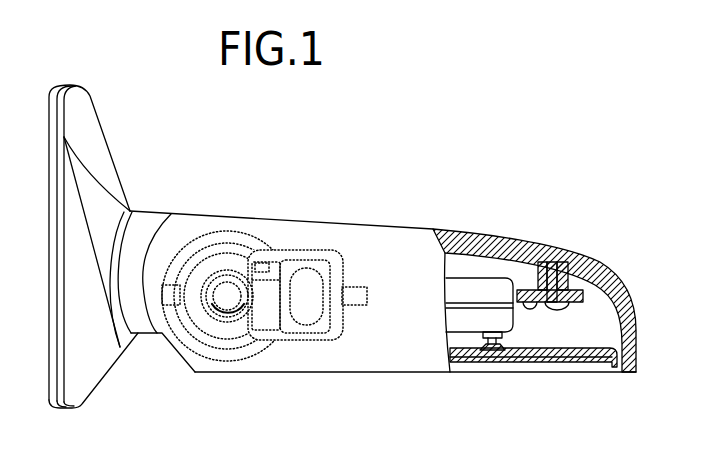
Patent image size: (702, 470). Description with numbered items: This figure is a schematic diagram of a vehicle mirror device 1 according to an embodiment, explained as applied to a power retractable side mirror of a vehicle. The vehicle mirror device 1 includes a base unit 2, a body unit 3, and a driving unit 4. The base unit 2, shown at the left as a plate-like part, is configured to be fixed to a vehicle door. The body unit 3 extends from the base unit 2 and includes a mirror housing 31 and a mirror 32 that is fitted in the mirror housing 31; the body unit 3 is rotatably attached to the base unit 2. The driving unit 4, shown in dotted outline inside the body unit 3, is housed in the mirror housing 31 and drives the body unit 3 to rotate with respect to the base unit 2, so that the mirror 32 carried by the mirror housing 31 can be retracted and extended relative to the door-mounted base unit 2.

The vehicle mirror device 1 is at (404, 168).
The base unit 2 is at (92, 393).
The body unit 3 is at (323, 372).
The driving unit 4 is at (290, 250).
The mirror housing 31 is at (523, 238).
The mirror 32 is at (525, 362).